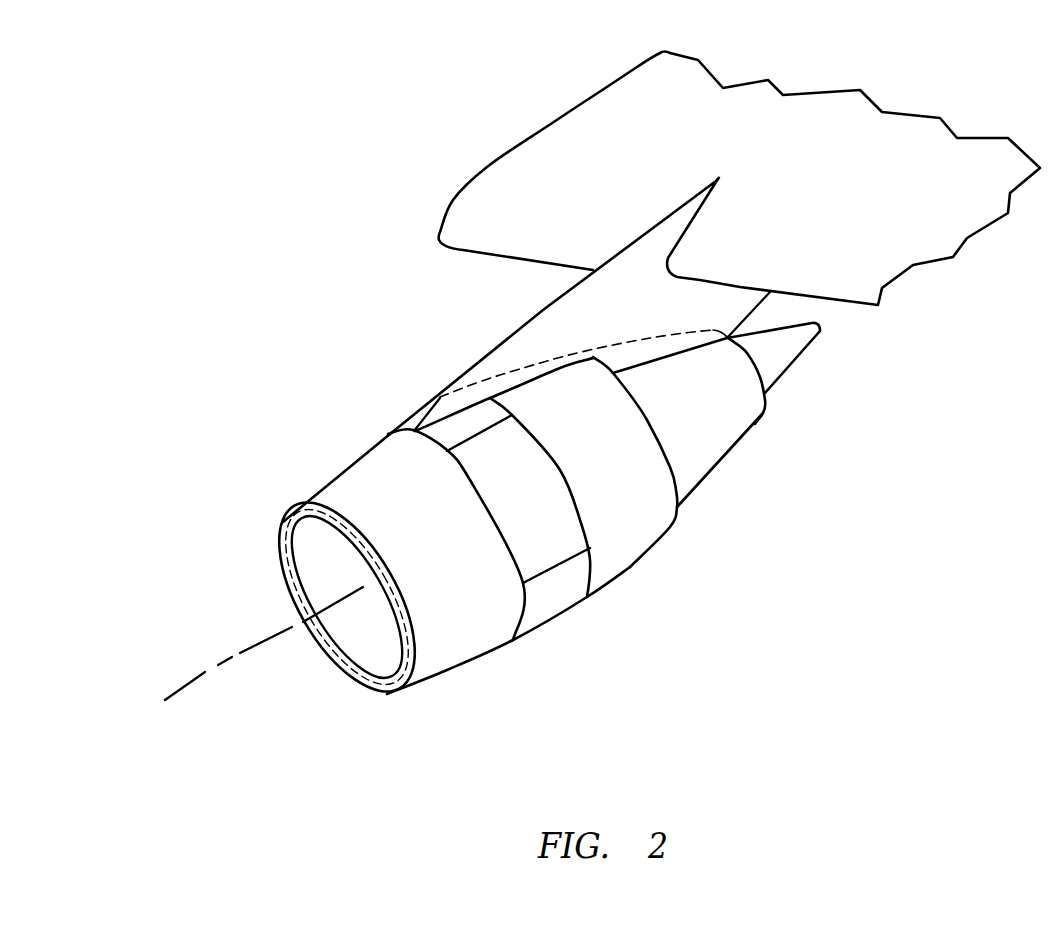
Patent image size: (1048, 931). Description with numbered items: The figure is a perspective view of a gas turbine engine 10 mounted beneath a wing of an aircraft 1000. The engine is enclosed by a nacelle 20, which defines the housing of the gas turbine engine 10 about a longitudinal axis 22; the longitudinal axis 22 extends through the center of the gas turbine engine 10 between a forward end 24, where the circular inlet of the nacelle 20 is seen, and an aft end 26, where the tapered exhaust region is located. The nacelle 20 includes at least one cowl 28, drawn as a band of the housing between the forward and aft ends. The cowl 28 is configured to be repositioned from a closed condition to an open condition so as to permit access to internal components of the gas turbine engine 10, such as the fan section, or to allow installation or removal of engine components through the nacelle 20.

The aircraft 1000 is at (509, 118).
The gas turbine engine 10 is at (551, 562).
The nacelle 20 is at (433, 652).
The longitudinal axis 22 is at (185, 725).
The forward end 24 is at (240, 583).
The aft end 26 is at (832, 371).
The cowl 28 is at (545, 557).